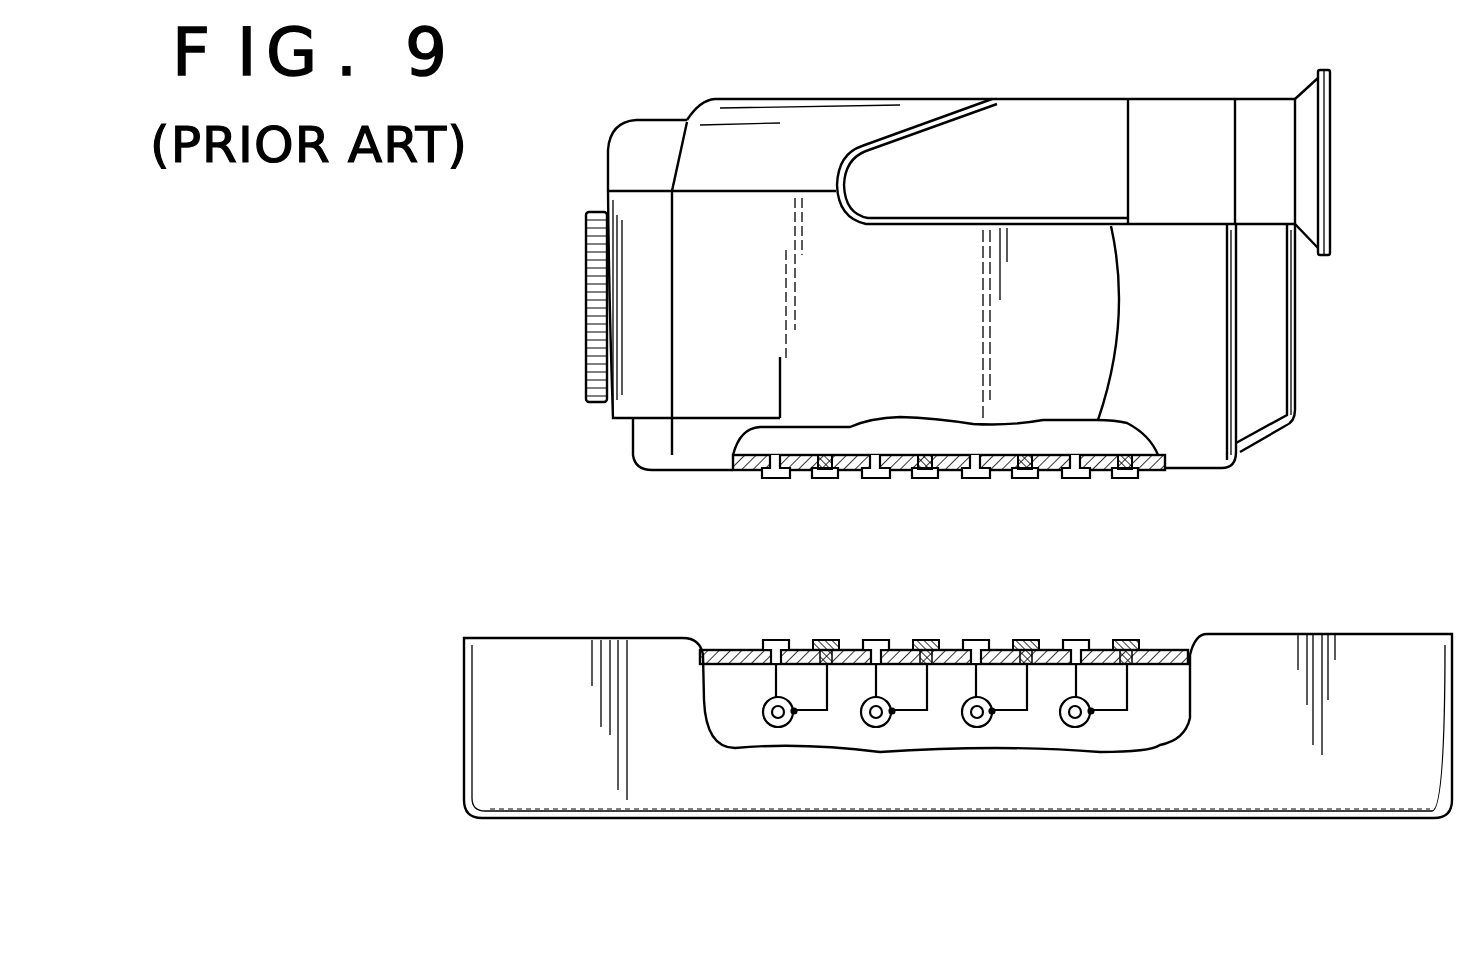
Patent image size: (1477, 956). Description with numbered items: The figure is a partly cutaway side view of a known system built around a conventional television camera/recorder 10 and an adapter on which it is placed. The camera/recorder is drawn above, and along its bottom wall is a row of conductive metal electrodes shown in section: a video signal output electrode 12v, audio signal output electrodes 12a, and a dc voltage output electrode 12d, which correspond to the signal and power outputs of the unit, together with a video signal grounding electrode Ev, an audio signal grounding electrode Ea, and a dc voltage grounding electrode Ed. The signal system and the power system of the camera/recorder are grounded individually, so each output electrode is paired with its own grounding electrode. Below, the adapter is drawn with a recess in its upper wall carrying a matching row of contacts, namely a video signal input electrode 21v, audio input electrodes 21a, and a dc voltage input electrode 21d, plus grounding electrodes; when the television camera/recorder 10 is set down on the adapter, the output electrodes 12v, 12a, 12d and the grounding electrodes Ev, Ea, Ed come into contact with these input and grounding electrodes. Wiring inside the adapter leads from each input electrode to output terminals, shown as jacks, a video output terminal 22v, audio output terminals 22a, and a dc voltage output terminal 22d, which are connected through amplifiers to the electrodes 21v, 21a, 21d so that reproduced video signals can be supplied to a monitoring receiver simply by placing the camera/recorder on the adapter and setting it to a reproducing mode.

The television camera/recorder 10 is at (836, 98).
The video signal output electrode 12v is at (775, 480).
The video signal grounding electrode Ev is at (825, 480).
The audio signal output electrodes 12a is at (875, 480).
The audio signal grounding electrode Ea is at (925, 480).
The dc voltage output electrode 12d is at (1075, 480).
The dc voltage grounding electrode Ed is at (1125, 480).
The video signal input electrode 21v is at (776, 638).
The audio input electrodes 21a is at (976, 638).
The dc voltage input electrode 21d is at (1083, 638).
The video output terminal 22v is at (776, 727).
The audio output terminals 22a is at (890, 723).
The dc voltage output terminal 22d is at (1080, 727).